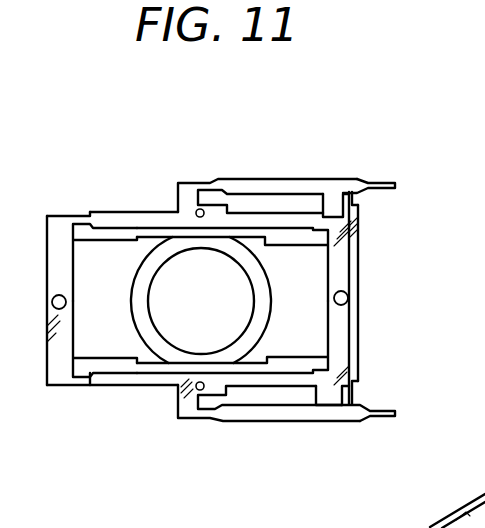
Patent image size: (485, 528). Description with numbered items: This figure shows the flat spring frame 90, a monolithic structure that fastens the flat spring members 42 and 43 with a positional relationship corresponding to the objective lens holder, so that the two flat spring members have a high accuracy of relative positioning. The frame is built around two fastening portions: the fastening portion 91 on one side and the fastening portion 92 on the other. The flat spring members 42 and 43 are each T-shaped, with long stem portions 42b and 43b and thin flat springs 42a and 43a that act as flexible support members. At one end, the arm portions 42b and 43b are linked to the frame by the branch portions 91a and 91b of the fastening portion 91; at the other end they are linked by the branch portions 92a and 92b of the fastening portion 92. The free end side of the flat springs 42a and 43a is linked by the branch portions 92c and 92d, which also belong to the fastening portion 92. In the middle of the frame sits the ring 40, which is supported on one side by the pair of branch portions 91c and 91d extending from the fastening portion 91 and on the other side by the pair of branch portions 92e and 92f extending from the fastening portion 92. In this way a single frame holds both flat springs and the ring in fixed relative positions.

The flat spring frame 90 is at (296, 89).
The fastening portion 91 is at (44, 282).
The branch portion 91a is at (82, 213).
The branch portion 91b is at (82, 388).
The branch portion 91c is at (120, 241).
The branch portion 91d is at (105, 357).
The fastening portion 92 is at (360, 289).
The branch portion 92a is at (330, 190).
The branch portion 92b is at (321, 386).
The branch portion 92c is at (352, 205).
The branch portion 92d is at (352, 392).
The branch portion 92e is at (308, 246).
The branch portion 92f is at (292, 356).
The flat spring member 42 is at (239, 173).
The first flat spring member 42a is at (282, 178).
The stem portion 42b is at (148, 210).
The flat spring member 43 is at (224, 426).
The flat spring 43a is at (265, 414).
The stem portion 43b is at (147, 388).
The ring 40 is at (222, 245).